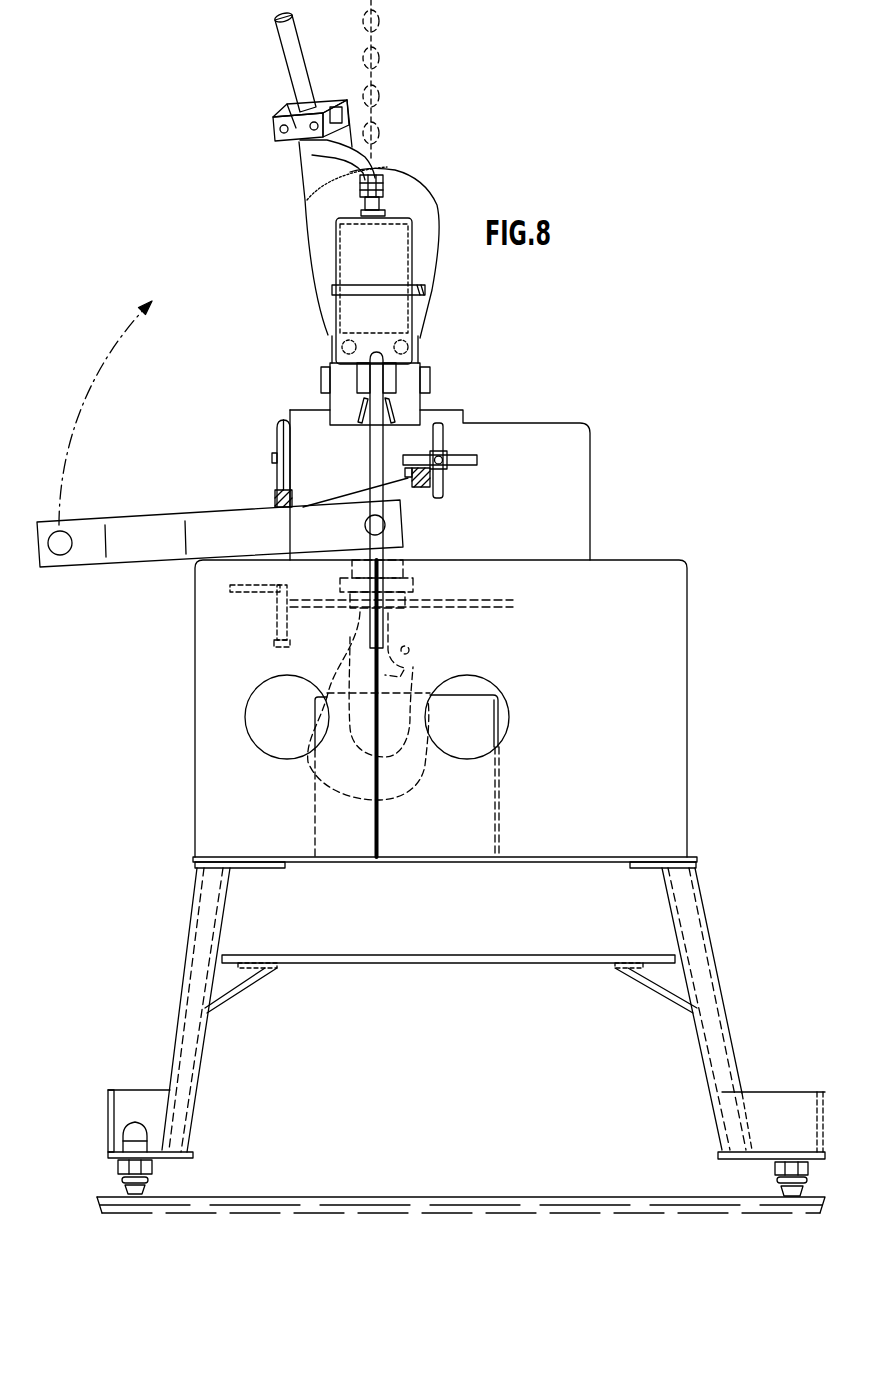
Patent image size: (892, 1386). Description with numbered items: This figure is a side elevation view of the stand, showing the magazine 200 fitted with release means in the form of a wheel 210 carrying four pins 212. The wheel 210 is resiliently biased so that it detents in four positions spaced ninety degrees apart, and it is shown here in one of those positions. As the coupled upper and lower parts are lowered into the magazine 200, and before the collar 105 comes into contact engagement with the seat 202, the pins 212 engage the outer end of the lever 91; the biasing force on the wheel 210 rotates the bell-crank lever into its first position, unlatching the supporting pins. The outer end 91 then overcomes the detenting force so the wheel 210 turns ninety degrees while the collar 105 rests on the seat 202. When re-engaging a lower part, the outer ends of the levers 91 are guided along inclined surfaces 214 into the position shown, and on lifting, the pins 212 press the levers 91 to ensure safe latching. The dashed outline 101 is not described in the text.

The outer end of lever 91 is at (410, 468).
The container 101 is at (410, 780).
The collar 105 is at (277, 619).
The magazine 200 is at (716, 931).
The seat 202 is at (513, 605).
The wheel 210 is at (452, 446).
The pins 212 is at (468, 465).
The inclined surfaces 214 is at (326, 494).